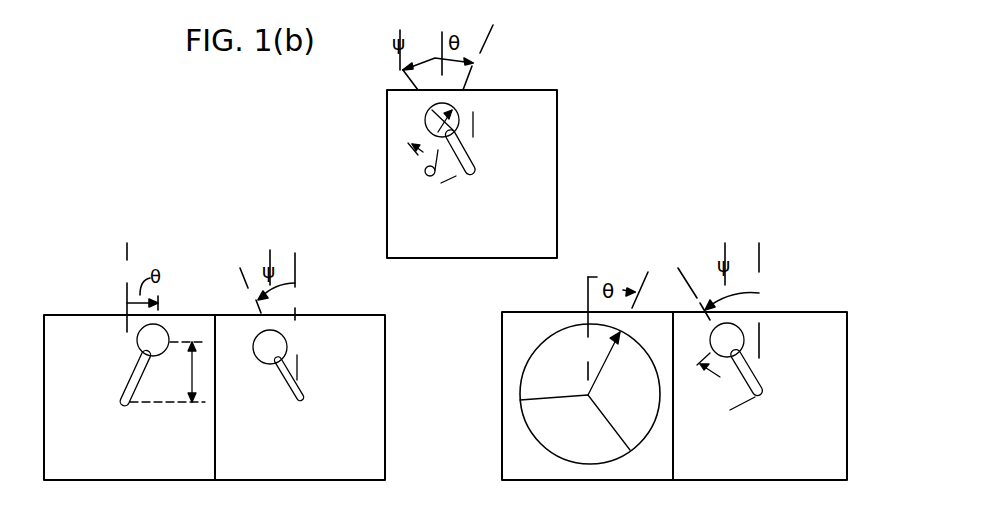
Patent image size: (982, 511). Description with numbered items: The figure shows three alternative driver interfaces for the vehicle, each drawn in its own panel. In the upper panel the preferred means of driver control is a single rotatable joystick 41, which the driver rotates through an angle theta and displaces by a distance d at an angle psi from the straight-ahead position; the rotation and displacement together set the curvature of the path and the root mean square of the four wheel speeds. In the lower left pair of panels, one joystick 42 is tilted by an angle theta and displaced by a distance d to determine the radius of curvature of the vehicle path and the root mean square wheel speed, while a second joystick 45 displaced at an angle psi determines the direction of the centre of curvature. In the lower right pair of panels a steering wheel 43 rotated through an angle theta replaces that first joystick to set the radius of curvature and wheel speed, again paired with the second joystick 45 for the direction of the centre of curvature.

The rotatable joystick 41 is at (473, 155).
The joystick 42 is at (128, 367).
The steering wheel 43 is at (530, 432).
The second joystick 45 is at (302, 367).